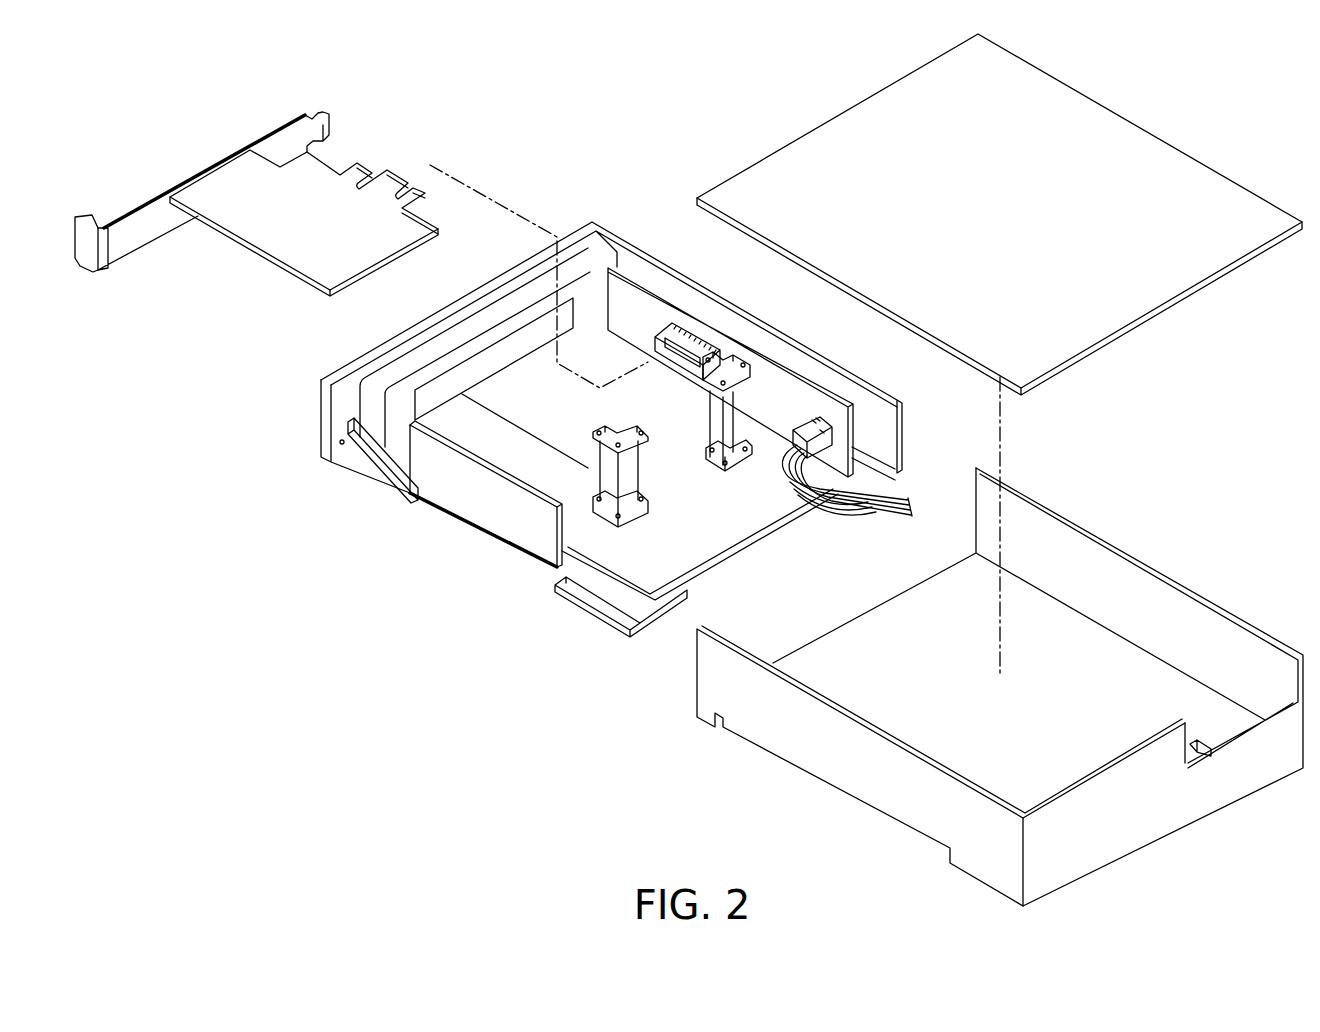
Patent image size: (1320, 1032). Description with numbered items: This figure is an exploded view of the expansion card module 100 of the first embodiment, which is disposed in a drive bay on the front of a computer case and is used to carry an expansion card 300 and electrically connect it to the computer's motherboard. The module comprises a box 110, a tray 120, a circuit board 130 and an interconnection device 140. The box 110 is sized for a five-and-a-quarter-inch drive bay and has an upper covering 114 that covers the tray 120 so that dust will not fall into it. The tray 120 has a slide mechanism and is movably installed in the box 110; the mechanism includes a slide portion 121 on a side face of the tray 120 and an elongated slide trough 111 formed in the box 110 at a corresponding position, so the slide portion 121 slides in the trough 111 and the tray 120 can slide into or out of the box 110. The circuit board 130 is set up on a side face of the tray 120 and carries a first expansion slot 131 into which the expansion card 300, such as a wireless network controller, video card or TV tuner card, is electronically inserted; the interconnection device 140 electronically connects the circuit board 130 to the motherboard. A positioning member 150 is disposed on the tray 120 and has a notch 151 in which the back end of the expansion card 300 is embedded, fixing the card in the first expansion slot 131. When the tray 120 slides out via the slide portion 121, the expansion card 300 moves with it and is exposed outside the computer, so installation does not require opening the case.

The expansion card module 100 is at (76, 63).
The box 110 is at (1000, 687).
The elongated slide trough 111 is at (823, 784).
The upper covering 114 is at (1148, 158).
The tray 120 is at (586, 430).
The slide portion 121 is at (372, 466).
The circuit board 130 is at (730, 339).
The first expansion slot 131 is at (702, 345).
The interconnection device 140 is at (921, 506).
The positioning member 150 is at (705, 419).
The notch 151 is at (747, 334).
The expansion card 300 is at (290, 250).